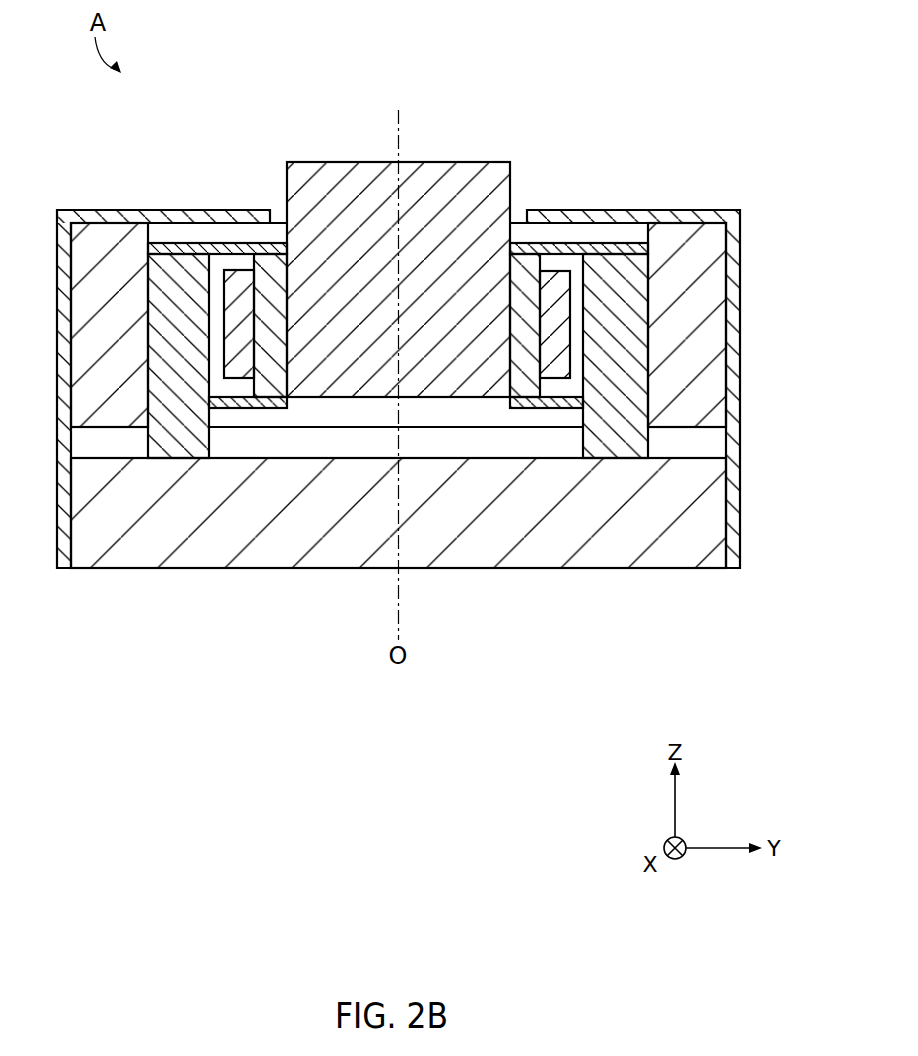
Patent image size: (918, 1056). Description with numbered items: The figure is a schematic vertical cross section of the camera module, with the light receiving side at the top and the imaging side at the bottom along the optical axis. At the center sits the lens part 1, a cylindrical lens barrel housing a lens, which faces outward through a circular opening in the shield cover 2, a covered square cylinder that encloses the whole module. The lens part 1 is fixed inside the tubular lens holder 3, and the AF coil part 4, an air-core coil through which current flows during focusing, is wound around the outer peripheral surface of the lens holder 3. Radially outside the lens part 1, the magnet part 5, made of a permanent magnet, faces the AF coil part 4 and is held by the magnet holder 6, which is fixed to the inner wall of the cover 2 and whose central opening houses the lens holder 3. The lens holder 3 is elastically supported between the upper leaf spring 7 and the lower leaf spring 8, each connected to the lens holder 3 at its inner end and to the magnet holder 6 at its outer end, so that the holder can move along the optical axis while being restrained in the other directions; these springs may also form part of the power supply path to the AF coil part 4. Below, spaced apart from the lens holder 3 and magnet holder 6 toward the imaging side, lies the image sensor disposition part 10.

The lens part 1 is at (425, 180).
The shield cover 2 is at (121, 215).
The lens holder 3 is at (280, 270).
The AF coil part 4 is at (238, 281).
The magnet part 5 is at (170, 450).
The magnet holder 6 is at (87, 342).
The upper leaf spring 7 is at (180, 248).
The lower leaf spring 8 is at (244, 404).
The image sensor disposition part 10 is at (405, 542).